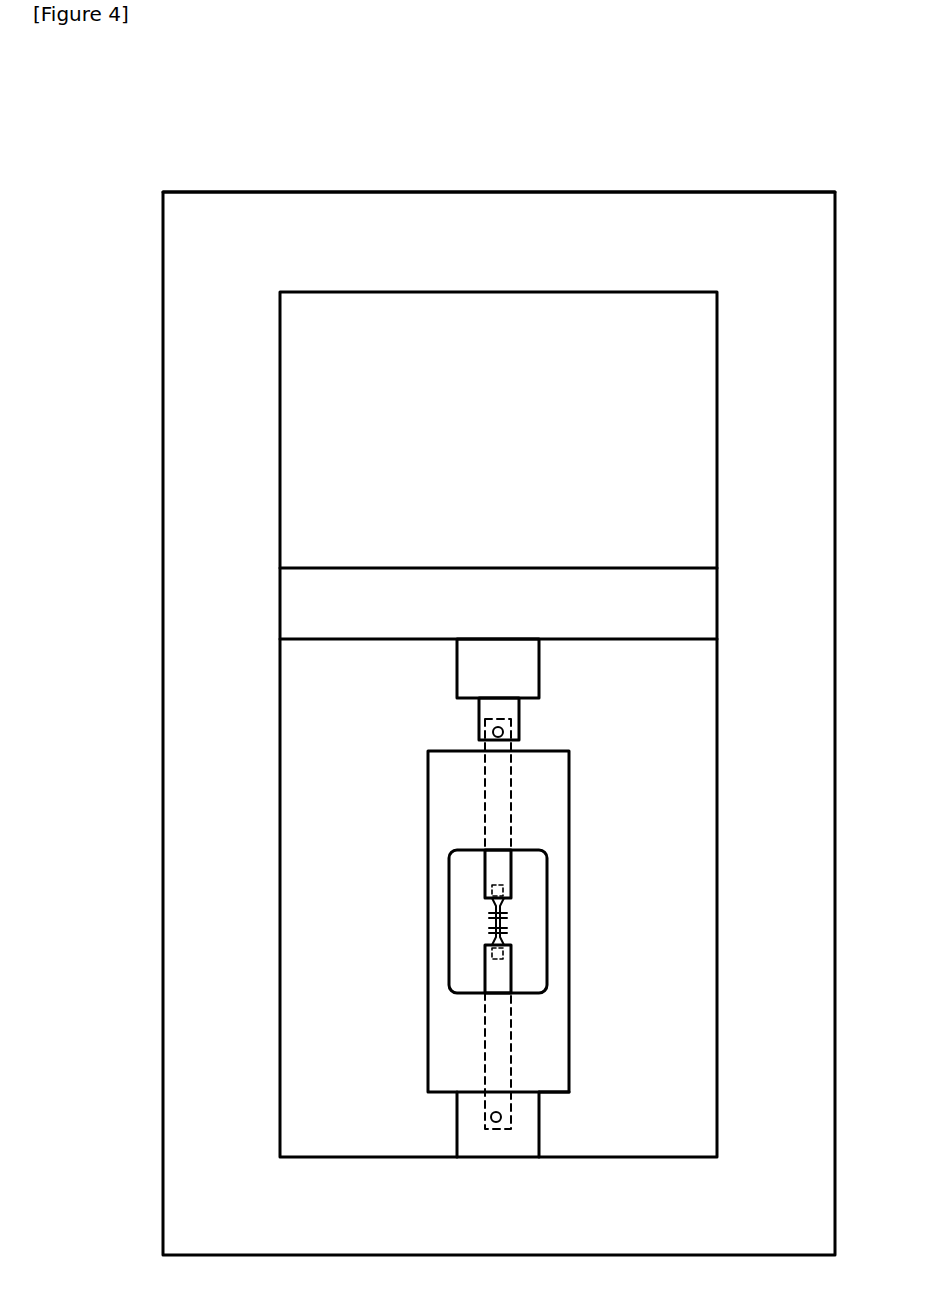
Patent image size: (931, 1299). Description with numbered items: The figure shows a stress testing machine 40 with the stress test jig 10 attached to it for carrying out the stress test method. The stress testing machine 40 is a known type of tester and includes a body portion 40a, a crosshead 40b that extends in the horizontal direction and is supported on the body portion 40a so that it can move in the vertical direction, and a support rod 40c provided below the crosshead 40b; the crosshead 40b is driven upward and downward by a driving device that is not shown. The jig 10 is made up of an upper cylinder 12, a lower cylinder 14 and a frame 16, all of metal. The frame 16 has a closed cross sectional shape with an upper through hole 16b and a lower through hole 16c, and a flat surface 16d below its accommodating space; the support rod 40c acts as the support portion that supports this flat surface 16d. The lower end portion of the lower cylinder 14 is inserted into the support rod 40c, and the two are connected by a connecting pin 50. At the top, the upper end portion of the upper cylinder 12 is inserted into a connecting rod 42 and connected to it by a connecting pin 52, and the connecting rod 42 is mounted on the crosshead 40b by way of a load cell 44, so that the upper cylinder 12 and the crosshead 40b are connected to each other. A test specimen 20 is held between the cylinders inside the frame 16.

The stress test jig 10 is at (383, 740).
The upper cylinder 12 is at (495, 864).
The lower cylinder 14 is at (500, 976).
The frame 16 is at (455, 1026).
The upper through hole 16b is at (507, 793).
The lower through hole 16c is at (507, 1028).
The flat surface 16d is at (550, 1094).
The test specimen 20 is at (503, 907).
The stress testing machine 40 is at (146, 171).
The body portion 40a is at (677, 201).
The crosshead 40b is at (583, 573).
The support rod 40c is at (482, 1150).
The connecting rod 42 is at (513, 707).
The load cell 44 is at (528, 674).
The connecting pin 50 is at (491, 1116).
The connecting pin 52 is at (504, 731).